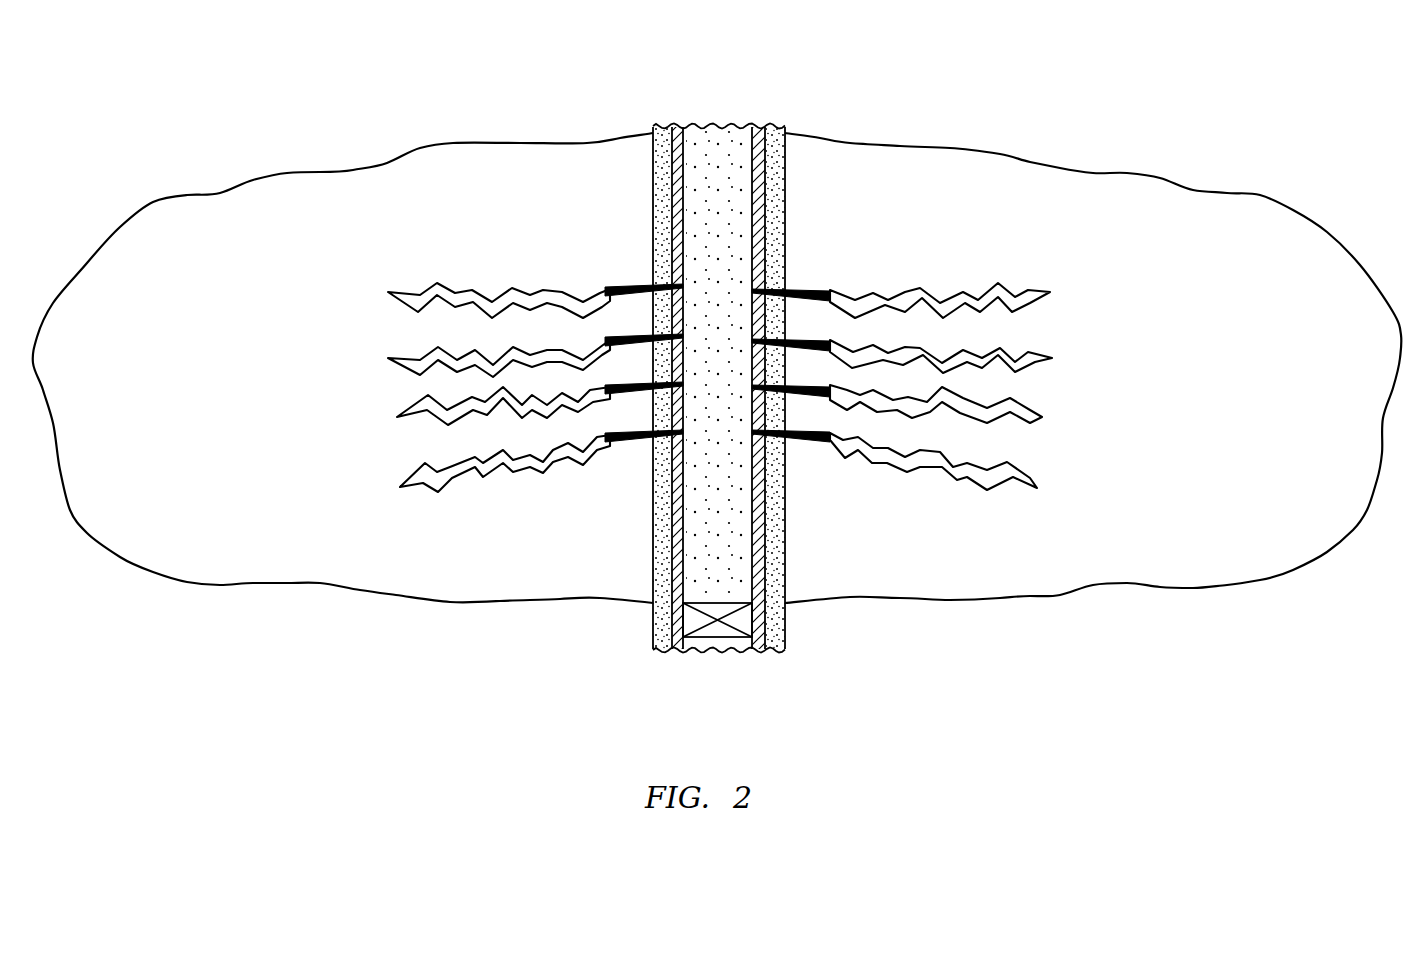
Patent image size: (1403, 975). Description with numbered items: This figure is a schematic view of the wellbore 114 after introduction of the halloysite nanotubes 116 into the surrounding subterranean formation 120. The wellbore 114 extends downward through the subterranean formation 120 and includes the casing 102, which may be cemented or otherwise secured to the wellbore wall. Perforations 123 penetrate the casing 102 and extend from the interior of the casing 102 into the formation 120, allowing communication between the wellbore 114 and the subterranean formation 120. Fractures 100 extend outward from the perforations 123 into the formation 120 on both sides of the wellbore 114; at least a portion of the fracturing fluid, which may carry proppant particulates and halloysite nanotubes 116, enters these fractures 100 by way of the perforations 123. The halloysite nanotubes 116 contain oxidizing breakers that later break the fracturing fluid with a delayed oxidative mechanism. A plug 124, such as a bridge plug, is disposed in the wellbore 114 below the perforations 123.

The fractures 100 is at (413, 308).
The casing 102 is at (654, 139).
The wellbore 114 is at (668, 127).
The halloysite nanotubes 116 is at (737, 123).
The subterranean formation 120 is at (186, 289).
The perforations 123 is at (763, 285).
The plug 124 is at (712, 640).